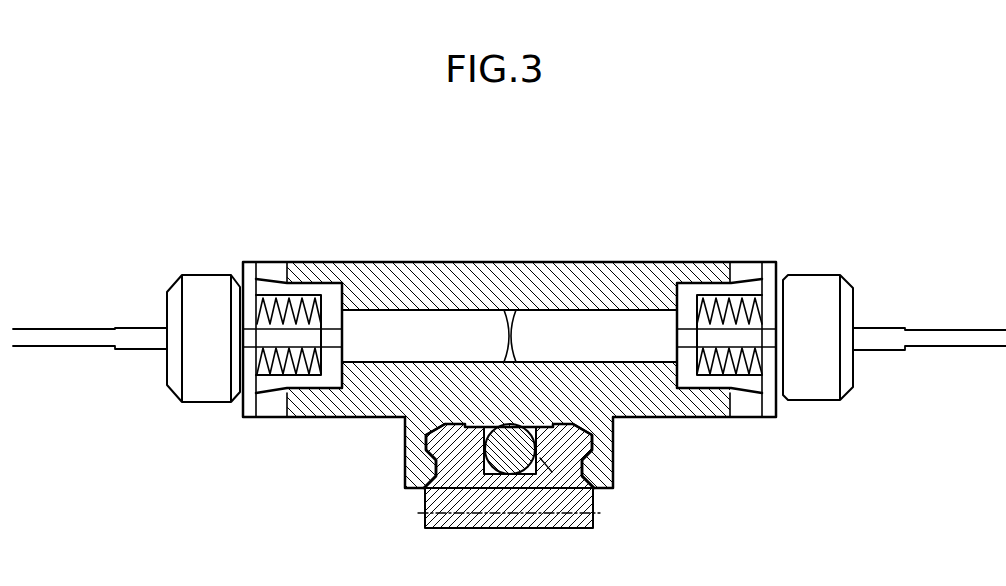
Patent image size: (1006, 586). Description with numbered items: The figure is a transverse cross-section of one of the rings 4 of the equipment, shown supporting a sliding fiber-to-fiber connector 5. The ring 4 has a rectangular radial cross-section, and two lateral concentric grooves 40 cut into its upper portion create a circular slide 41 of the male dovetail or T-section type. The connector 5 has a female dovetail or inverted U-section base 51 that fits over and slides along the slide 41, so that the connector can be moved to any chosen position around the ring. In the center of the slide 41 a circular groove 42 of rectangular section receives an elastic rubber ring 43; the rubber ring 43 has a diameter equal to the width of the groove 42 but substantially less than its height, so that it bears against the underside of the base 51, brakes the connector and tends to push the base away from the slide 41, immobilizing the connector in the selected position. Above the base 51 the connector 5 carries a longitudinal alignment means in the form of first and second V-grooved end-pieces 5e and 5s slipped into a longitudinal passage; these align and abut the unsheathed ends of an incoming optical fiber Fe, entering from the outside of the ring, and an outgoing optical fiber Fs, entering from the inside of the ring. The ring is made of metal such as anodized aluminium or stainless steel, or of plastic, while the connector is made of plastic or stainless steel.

The fiber-to-fiber connector 5 is at (495, 262).
The first V-grooved end-piece 5e is at (194, 283).
The second V-grooved end-piece 5s is at (815, 287).
The base 51 is at (616, 421).
The circular slide 41 is at (448, 444).
The elastic rubber ring 43 is at (583, 460).
The lateral concentric groove 40 is at (483, 476).
The circular rectangular groove 42 is at (487, 464).
The ring 4 is at (593, 524).
The incoming optical fiber Fe is at (40, 333).
The outgoing optical fiber Fs is at (958, 336).